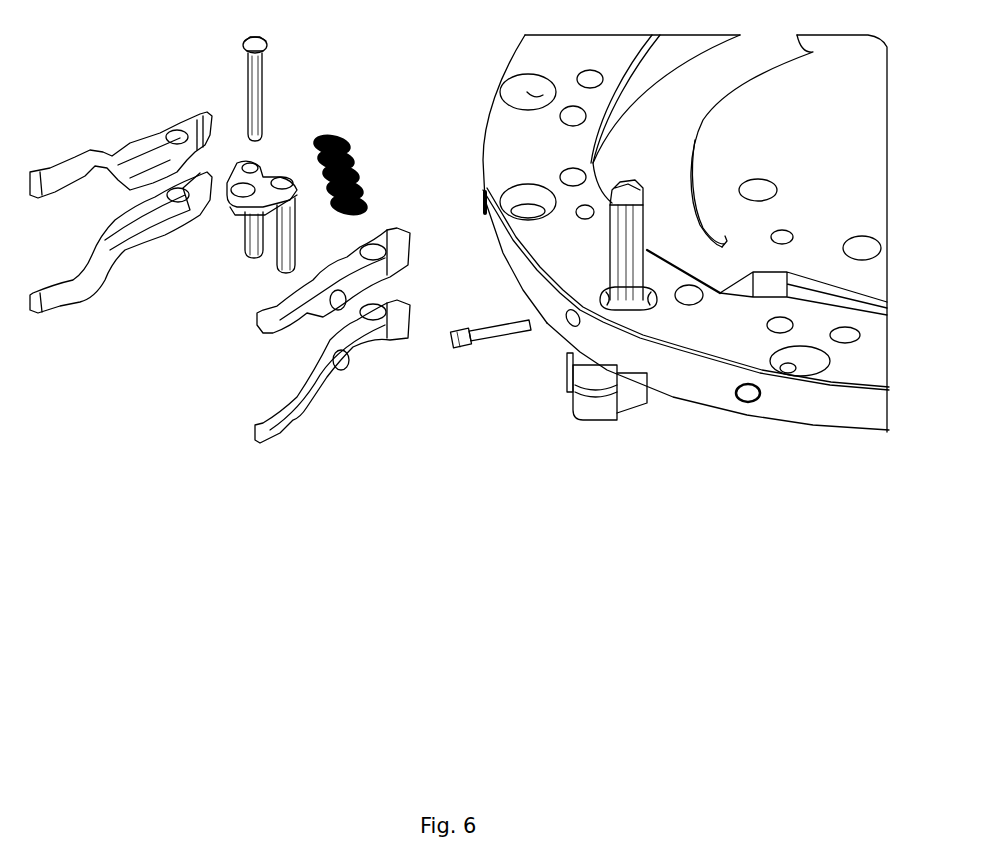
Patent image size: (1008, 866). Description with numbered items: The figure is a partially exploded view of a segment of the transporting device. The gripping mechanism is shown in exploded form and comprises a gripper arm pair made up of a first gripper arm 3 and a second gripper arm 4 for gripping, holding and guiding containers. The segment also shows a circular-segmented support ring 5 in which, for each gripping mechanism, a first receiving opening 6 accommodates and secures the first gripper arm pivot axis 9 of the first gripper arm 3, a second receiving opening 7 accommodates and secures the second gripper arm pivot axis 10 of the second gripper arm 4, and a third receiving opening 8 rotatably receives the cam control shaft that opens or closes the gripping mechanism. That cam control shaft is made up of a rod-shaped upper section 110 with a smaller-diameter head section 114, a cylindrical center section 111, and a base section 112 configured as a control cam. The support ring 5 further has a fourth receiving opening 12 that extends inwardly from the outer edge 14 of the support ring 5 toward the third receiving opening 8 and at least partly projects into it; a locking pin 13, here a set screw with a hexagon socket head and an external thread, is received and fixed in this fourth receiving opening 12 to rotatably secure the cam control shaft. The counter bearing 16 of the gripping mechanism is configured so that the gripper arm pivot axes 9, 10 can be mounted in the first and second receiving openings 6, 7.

The first gripper arm 3 is at (60, 188).
The second gripper arm 4 is at (268, 333).
The support ring 5 is at (695, 338).
The first receiving opening 6 is at (661, 245).
The second receiving opening 7 is at (702, 272).
The third receiving opening 8 is at (582, 293).
The first gripper arm pivot axis 9 is at (237, 226).
The second gripper arm pivot axis 10 is at (296, 229).
The fourth receiving opening 12 is at (556, 340).
The locking pin 13 is at (477, 357).
The outer edge 14 is at (667, 376).
The counter bearing 16 is at (228, 275).
The rod-shaped upper section 110 is at (642, 193).
The cylindrical center section 111 is at (717, 285).
The base section 112 is at (605, 414).
The head section 114 is at (591, 213).